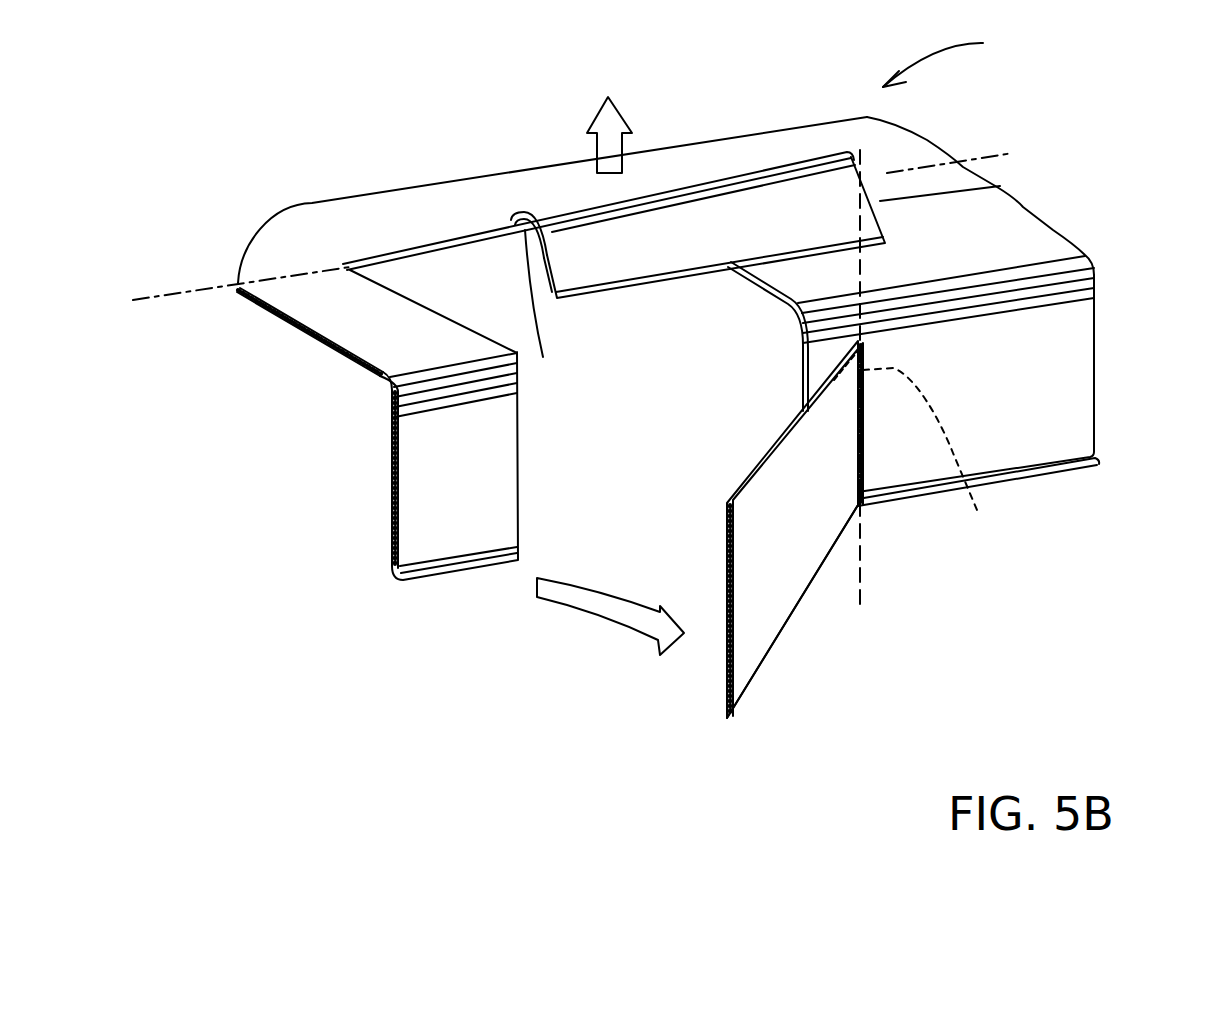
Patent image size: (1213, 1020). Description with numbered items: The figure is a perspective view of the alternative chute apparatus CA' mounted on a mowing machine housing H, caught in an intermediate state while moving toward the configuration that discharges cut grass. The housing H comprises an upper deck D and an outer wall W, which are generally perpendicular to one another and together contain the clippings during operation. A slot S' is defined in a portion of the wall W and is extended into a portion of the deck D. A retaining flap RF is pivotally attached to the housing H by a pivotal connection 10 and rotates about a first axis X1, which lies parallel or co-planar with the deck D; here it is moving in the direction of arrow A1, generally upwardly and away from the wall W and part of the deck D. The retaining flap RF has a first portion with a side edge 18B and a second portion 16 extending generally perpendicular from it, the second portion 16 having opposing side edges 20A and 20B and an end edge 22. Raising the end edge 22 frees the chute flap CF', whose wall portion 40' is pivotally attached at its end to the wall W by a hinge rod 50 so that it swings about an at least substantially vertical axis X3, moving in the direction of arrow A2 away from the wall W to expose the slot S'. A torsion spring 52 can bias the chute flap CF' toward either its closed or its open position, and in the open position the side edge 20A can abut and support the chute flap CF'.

The pivotal connection 10 is at (342, 265).
The second portion 16 is at (676, 259).
The side edge 18B is at (417, 243).
The side edge 20A is at (1000, 186).
The side edge 20B is at (541, 252).
The end edge 22 is at (683, 277).
The wall portion 40' is at (795, 529).
The hinge rod 50 is at (990, 324).
The torsion spring 52 is at (939, 454).
The upper deck D is at (367, 222).
The housing H is at (302, 327).
The retaining flap RF is at (551, 310).
The slot S' is at (489, 466).
The outer wall W is at (990, 390).
The first axis X1 is at (210, 285).
The vertical axis X3 is at (860, 567).
The arrow A1 is at (590, 149).
The arrow A2 is at (582, 620).
The chute apparatus CA' is at (959, 59).
The chute flap CF' is at (816, 611).